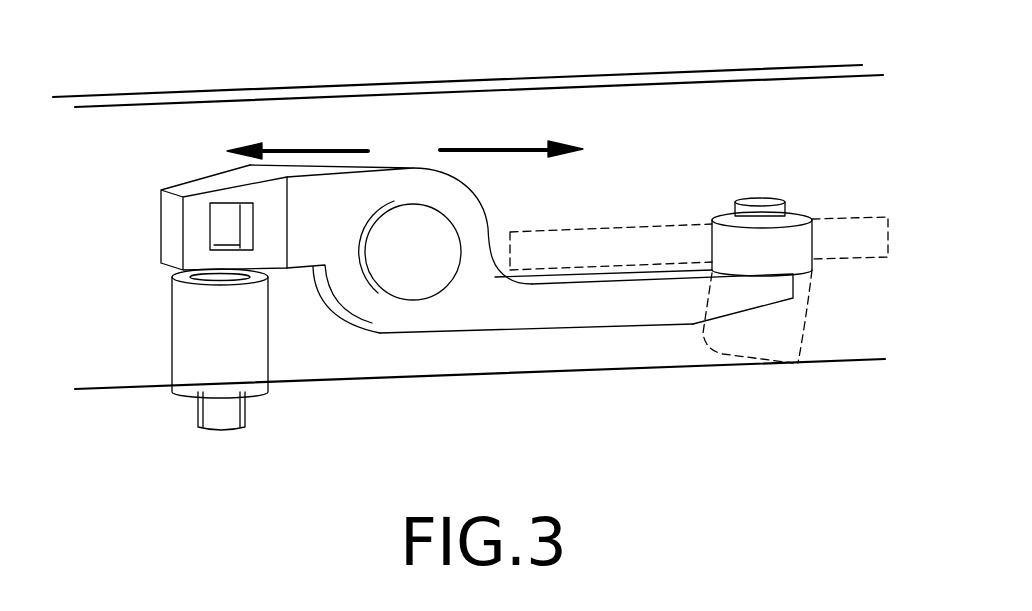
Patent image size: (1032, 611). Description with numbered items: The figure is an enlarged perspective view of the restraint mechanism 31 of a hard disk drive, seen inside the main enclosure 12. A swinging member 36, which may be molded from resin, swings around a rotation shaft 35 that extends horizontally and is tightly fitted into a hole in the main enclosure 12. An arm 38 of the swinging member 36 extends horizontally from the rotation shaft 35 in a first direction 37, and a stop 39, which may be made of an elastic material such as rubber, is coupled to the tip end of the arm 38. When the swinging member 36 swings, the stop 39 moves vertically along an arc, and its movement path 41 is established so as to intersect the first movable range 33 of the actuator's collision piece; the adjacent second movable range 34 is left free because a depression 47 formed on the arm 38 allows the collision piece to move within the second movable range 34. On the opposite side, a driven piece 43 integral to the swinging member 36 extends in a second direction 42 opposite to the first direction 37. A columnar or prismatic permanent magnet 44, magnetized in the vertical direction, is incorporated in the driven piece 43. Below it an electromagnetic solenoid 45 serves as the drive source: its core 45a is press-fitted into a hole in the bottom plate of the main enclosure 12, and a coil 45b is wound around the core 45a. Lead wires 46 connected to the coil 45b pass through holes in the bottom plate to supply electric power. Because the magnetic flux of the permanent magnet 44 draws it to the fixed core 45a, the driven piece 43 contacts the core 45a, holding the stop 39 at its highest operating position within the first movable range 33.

The main enclosure 12 is at (253, 93).
The restraint mechanism 31 is at (676, 70).
The first movable range 33 is at (885, 217).
The second movable range 34 is at (620, 227).
The rotation shaft 35 is at (423, 300).
The swinging member 36 is at (586, 358).
The first direction 37 is at (493, 135).
The arm 38 is at (517, 330).
The stop 39 is at (822, 197).
The movement path 41 is at (808, 340).
The second direction 42 is at (343, 141).
The driven piece 43 is at (377, 163).
The permanent magnet 44 is at (222, 212).
The electromagnetic solenoid 45 is at (221, 349).
The core 45a is at (228, 430).
The coil 45b is at (262, 347).
The lead wires 46 is at (190, 426).
The depression 47 is at (536, 199).